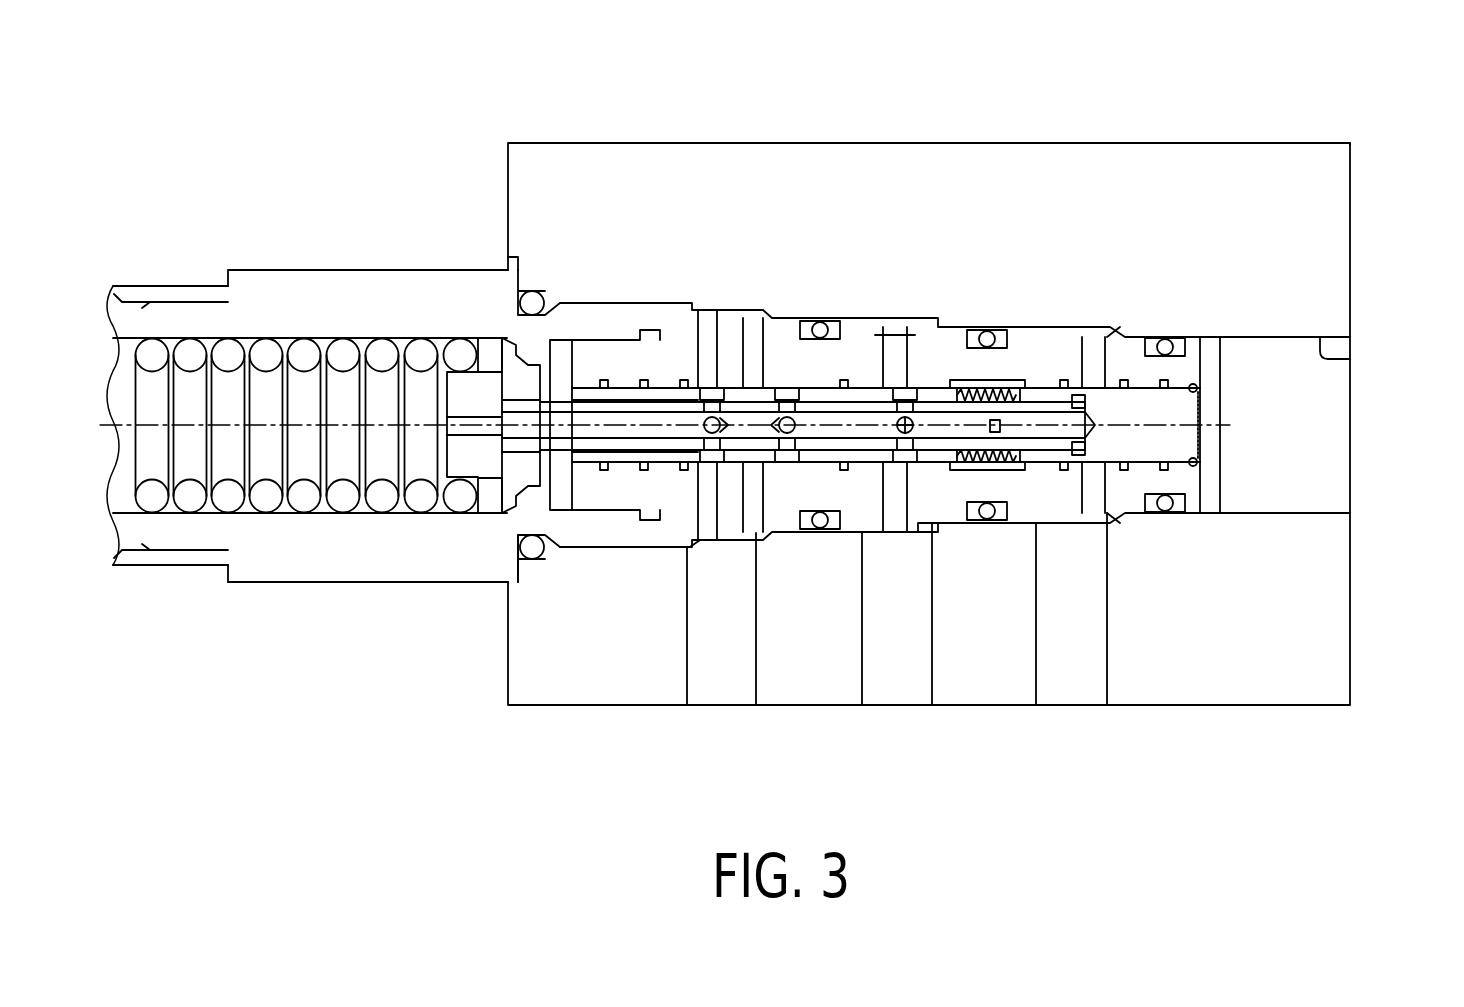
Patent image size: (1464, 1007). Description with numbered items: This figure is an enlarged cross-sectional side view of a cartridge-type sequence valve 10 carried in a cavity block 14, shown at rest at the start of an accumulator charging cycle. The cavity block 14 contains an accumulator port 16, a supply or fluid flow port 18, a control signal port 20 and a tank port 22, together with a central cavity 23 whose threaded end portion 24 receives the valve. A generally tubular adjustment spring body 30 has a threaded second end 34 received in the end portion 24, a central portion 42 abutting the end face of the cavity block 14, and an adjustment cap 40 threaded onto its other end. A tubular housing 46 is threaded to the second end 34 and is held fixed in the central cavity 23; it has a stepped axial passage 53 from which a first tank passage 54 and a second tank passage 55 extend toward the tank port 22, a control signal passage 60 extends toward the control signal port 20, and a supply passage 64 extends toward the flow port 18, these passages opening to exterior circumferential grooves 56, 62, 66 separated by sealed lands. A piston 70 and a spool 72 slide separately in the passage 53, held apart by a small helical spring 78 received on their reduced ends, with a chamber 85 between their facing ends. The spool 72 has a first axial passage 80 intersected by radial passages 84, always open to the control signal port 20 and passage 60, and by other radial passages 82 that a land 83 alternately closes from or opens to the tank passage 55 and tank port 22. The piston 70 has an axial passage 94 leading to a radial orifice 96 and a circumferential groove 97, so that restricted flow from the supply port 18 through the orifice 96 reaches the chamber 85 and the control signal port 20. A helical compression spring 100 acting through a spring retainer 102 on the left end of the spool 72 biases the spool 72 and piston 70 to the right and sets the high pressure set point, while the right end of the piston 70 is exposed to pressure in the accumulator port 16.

The sequence valve 10 is at (1384, 146).
The cavity block 14 is at (1295, 705).
The accumulator port 16 is at (1335, 490).
The supply or fluid flow port 18 is at (1046, 705).
The control signal port 20 is at (875, 705).
The tank port 22 is at (715, 705).
The central cavity 23 is at (1350, 355).
The threaded end portion 24 is at (616, 682).
The adjustment spring body 30 is at (227, 590).
The second end 34 is at (578, 533).
The adjustment cap 40 is at (172, 293).
The central portion 42 is at (345, 585).
The housing 46 is at (1192, 487).
The axial passage 53 is at (1195, 392).
The first tank passage 54 is at (703, 507).
The second tank passage 55 is at (755, 518).
The exterior circumferential groove 56 is at (720, 525).
The control signal passage 60 is at (893, 492).
The exterior circumferential groove 62 is at (918, 525).
The supply or flow source passage 64 is at (1082, 490).
The exterior circumferential groove 66 is at (1100, 530).
The piston 70 is at (1190, 432).
The spool 72 is at (603, 448).
The helical spring 78 is at (987, 470).
The first axial passage 80 is at (848, 408).
The radial passages 82 is at (783, 397).
The land 83 is at (755, 387).
The radial passages 84 is at (905, 403).
The chamber 85 is at (983, 390).
The axial passage 94 is at (1035, 410).
The radial orifice 96 is at (1075, 443).
The circumferential groove 97 is at (1085, 450).
The helical compression spring 100 is at (383, 355).
The spring retainer 102 is at (473, 400).